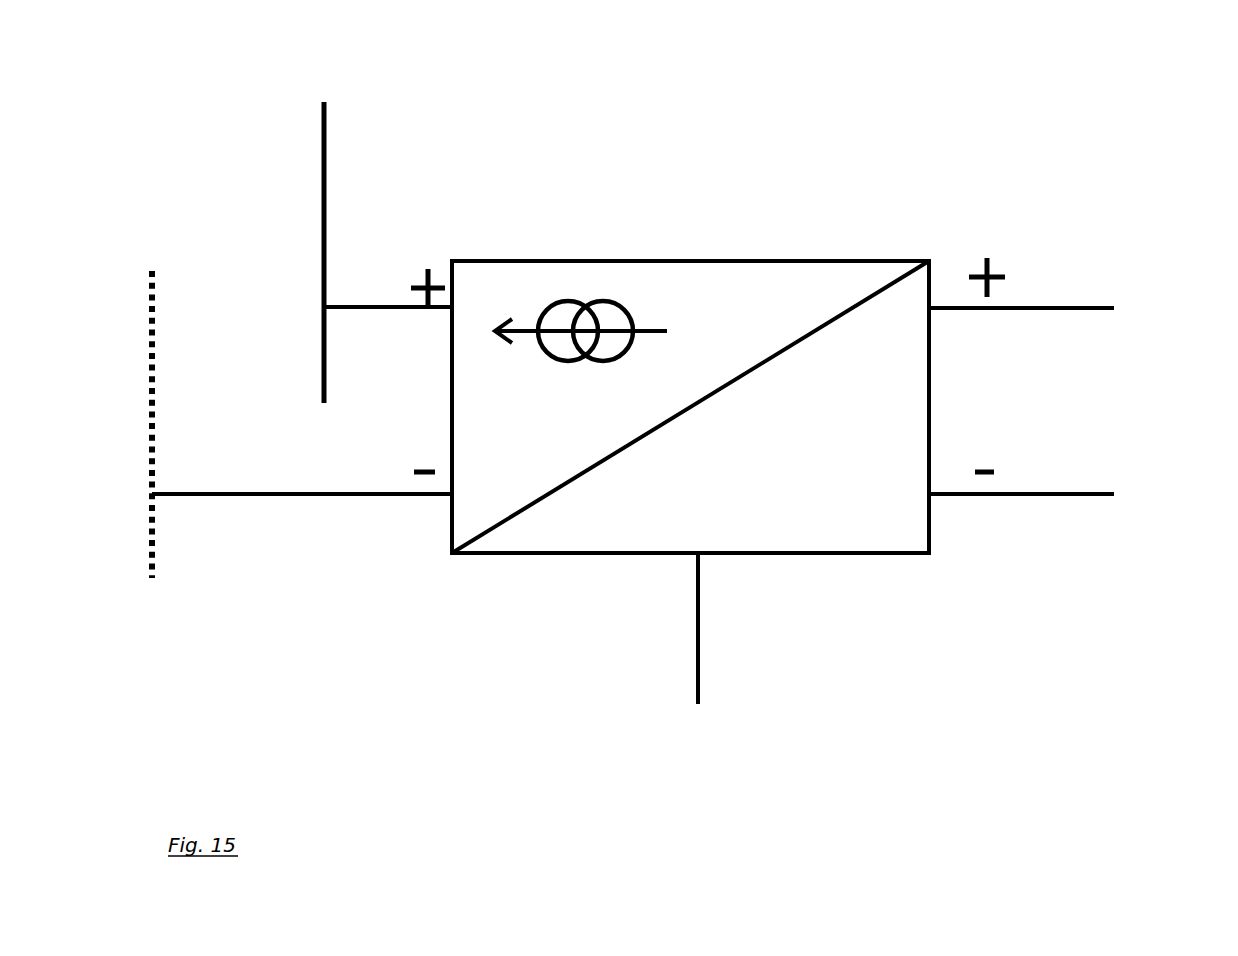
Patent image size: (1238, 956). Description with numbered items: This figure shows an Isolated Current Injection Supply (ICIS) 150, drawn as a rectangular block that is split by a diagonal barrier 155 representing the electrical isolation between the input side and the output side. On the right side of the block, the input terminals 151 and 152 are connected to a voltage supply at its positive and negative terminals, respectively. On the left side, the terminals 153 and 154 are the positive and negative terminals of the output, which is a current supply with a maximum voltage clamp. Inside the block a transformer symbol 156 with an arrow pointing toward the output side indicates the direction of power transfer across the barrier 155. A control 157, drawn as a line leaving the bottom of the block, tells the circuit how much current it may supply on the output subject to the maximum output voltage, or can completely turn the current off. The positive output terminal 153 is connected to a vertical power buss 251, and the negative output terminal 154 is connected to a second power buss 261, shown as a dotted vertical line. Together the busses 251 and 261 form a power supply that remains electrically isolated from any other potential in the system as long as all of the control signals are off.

The Isolated Current Injection Supply 150 is at (838, 58).
The positive input terminal 151 is at (1073, 298).
The negative input terminal 152 is at (1076, 482).
The positive output terminal 153 is at (395, 297).
The negative output terminal 154 is at (277, 470).
The barrier 155 is at (800, 312).
The isolation transformer 156 is at (550, 285).
The control 157 is at (708, 657).
The power buss 251 is at (303, 131).
The power buss 261 is at (153, 254).